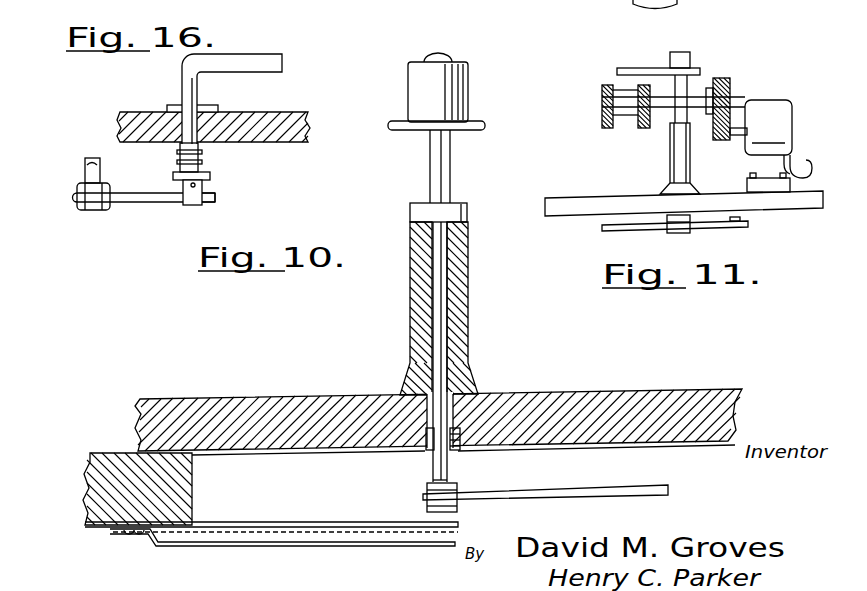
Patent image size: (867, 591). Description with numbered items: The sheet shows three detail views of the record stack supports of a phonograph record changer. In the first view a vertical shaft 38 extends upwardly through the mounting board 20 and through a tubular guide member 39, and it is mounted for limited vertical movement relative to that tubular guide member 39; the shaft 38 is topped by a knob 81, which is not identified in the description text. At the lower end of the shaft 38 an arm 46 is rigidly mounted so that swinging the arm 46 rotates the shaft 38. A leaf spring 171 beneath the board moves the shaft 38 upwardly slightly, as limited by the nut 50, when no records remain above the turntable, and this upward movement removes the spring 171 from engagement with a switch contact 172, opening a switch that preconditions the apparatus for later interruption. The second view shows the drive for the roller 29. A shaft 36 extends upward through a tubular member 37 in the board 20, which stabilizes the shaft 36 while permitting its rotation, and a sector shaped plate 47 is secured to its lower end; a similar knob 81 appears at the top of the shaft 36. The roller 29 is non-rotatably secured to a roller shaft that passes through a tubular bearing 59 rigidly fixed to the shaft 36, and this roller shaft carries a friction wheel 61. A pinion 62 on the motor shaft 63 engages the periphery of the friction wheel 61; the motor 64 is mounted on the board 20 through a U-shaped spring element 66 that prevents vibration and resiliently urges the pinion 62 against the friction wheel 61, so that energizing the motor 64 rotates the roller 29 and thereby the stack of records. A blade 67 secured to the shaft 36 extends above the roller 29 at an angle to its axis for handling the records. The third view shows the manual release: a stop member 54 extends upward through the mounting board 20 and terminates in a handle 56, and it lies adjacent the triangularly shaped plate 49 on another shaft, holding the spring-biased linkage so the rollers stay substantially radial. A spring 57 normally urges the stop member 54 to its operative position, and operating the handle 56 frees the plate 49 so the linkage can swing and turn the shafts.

In FIG. 16, the mounting board 20 is at (145, 122).
In FIG. 10, the mounting board 20 is at (243, 412).
In FIG. 11, the mounting board 20 is at (803, 198).
In FIG. 16, the handle 56 is at (266, 61).
In FIG. 16, the spring 57 is at (205, 163).
In FIG. 16, the triangularly shaped plate 49 is at (150, 203).
In FIG. 16, the stop member 54 is at (190, 205).
In FIG. 10, the knob 81 is at (425, 92).
In FIG. 11, the knob 81 is at (697, 40).
In FIG. 10, the tubular guide member 39 is at (458, 320).
In FIG. 10, the shaft 38 is at (438, 349).
In FIG. 10, the nut 50 is at (430, 490).
In FIG. 10, the arm 46 is at (488, 493).
In FIG. 10, the leaf spring 171 is at (280, 521).
In FIG. 10, the switch contact 172 is at (365, 540).
In FIG. 11, the blade 67 is at (643, 58).
In FIG. 11, the shaft 36 is at (687, 83).
In FIG. 11, the roller 29 is at (627, 113).
In FIG. 11, the tubular bearing 59 is at (663, 110).
In FIG. 11, the friction wheel 61 is at (728, 82).
In FIG. 11, the motor shaft 63 is at (733, 122).
In FIG. 11, the pinion 62 is at (722, 134).
In FIG. 11, the motor 64 is at (783, 118).
In FIG. 11, the U-shaped spring element 66 is at (803, 157).
In FIG. 11, the tubular member 37 is at (672, 167).
In FIG. 11, the sector shaped plate 47 is at (657, 232).